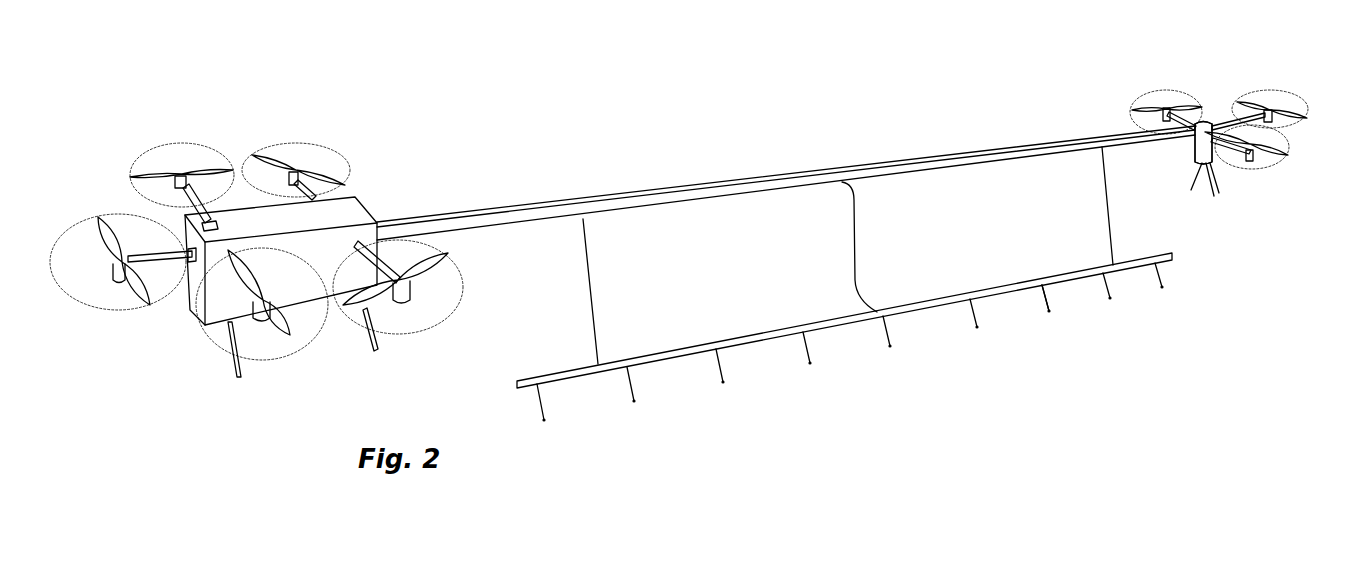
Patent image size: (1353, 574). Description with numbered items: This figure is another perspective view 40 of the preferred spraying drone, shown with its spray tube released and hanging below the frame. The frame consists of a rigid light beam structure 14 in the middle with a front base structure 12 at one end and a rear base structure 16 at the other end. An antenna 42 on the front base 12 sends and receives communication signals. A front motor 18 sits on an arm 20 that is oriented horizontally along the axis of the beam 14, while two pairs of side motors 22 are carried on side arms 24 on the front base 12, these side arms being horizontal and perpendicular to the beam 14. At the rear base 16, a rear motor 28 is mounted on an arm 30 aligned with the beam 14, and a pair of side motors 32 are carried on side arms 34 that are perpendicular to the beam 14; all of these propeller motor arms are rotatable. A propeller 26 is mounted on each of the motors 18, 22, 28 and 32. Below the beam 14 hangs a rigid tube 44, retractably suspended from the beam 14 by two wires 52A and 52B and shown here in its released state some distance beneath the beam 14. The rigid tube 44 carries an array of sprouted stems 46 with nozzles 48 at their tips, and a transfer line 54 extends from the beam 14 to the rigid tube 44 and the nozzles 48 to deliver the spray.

The front base structure 12 is at (322, 307).
The rigid light beam structure 14 is at (690, 186).
The rear base structure 16 is at (1130, 137).
The front motor 18 is at (120, 287).
The arm 20 is at (162, 268).
The side motors 22 is at (440, 311).
The side arms 24 is at (155, 191).
The propeller 26 is at (228, 162).
The rear motor 28 is at (1283, 125).
The arm 30 is at (1228, 175).
The side motors 32 is at (1250, 160).
The side arms 34 is at (1228, 175).
The perspective view 40 is at (541, 150).
The antenna 42 is at (207, 217).
The rigid tube 44 is at (658, 365).
The sprouted stems 46 is at (807, 340).
The nozzles 48 is at (1048, 311).
The wire 52A is at (590, 262).
The wire 52B is at (1102, 192).
The transfer line 54 is at (855, 227).